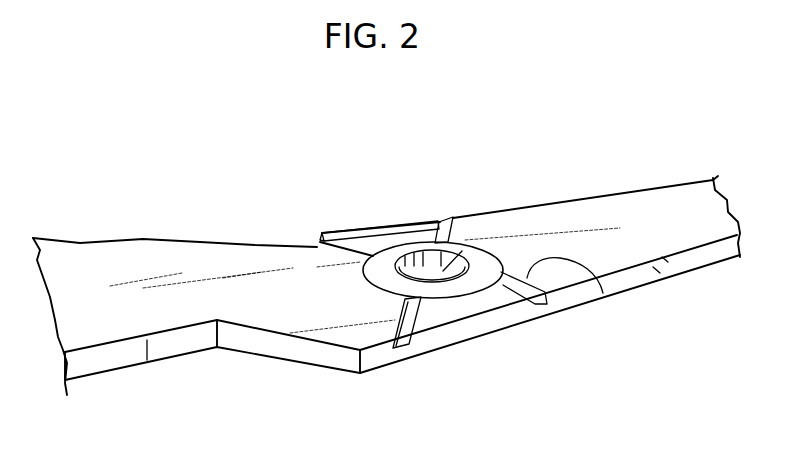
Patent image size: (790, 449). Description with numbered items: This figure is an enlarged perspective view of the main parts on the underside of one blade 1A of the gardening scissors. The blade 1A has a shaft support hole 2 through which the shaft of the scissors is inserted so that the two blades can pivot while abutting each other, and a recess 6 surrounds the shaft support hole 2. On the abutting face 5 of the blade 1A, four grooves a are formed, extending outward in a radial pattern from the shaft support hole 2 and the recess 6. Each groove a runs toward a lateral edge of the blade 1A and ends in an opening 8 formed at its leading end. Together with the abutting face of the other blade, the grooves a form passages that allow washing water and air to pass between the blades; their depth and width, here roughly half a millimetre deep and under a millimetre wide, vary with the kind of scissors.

The blade 1A is at (255, 237).
The shaft support hole 2 is at (457, 243).
The abutting face 5 is at (548, 232).
The recess 6 is at (380, 283).
The opening 8 is at (318, 247).
The groove a is at (343, 240).